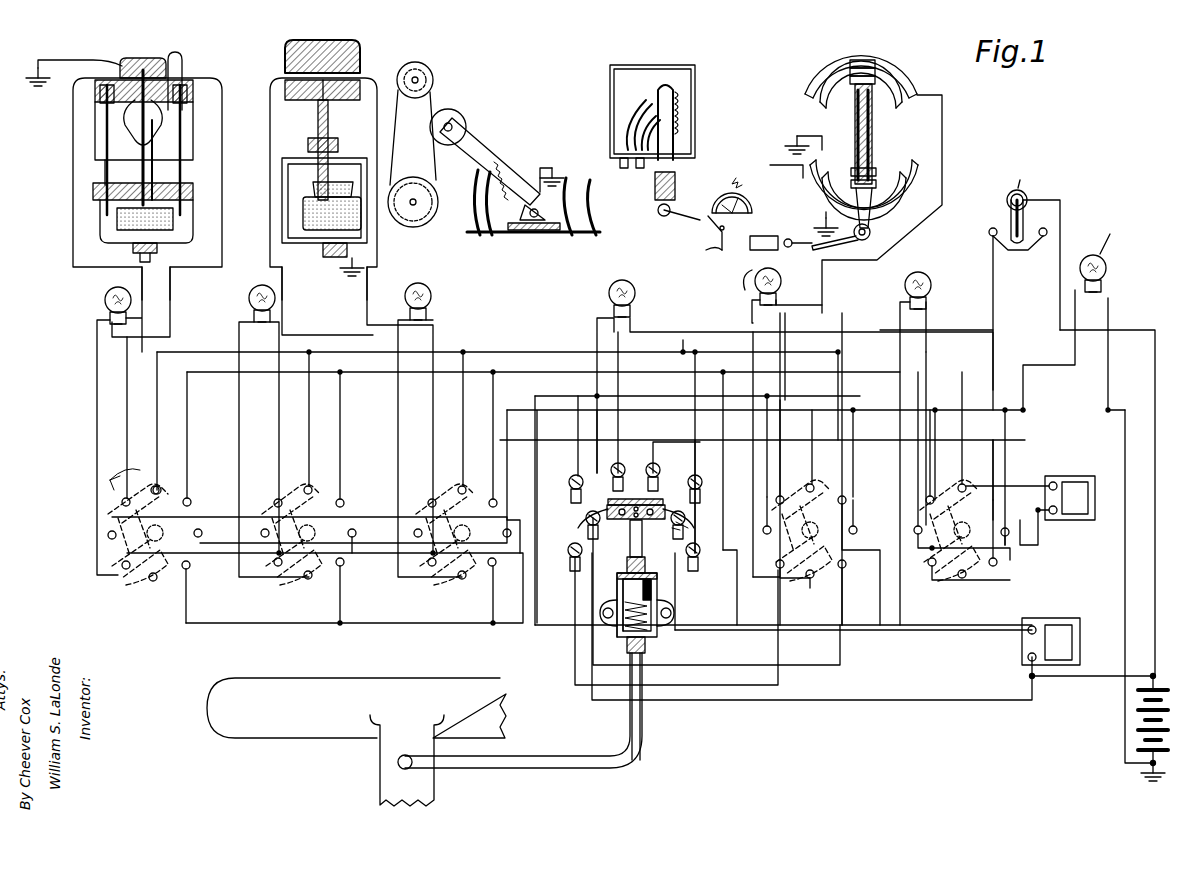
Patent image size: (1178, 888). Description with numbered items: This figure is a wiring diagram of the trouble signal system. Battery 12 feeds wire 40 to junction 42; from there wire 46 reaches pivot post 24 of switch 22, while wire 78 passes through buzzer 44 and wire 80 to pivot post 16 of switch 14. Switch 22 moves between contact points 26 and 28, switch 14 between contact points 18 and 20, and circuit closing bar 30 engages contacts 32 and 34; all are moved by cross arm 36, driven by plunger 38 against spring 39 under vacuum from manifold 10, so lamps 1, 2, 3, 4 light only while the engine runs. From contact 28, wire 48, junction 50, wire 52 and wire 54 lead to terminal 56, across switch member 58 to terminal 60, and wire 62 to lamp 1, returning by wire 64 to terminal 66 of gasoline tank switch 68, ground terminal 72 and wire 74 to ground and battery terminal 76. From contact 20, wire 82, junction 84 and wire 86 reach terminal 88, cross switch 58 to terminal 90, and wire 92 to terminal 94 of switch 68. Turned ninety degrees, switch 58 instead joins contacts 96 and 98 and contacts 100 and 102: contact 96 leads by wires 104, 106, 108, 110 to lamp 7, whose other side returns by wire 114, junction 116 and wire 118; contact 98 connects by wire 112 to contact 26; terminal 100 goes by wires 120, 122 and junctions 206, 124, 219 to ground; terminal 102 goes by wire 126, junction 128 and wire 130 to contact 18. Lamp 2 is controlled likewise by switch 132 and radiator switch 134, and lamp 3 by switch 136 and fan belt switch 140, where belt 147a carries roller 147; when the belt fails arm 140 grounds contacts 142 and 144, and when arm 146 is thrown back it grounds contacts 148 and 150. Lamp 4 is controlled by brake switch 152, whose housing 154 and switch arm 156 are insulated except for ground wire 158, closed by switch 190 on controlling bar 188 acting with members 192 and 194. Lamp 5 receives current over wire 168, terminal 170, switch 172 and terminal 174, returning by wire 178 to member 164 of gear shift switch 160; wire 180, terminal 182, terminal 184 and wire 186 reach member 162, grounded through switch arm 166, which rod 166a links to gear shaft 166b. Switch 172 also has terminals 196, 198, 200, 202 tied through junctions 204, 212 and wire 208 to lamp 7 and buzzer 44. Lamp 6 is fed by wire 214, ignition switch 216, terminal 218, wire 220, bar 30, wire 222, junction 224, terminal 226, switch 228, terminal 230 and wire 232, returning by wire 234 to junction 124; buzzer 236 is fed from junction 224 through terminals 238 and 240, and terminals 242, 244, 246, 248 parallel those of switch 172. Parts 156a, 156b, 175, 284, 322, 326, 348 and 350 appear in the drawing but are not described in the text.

The lamp 1 is at (109, 305).
The lamp 2 is at (253, 303).
The lamp 3 is at (408, 301).
The lamp 4 is at (612, 298).
The lamp 5 is at (759, 284).
The lamp 6 is at (924, 288).
The switch off signal lamp 7 is at (1119, 250).
The manifold 10 is at (420, 692).
The battery 12 is at (1138, 720).
The switch 14 is at (690, 520).
The pivot post 16 is at (672, 526).
The contact point 18 is at (692, 540).
The contact point 20 is at (690, 486).
The switch 22 is at (580, 530).
The pivot post 24 is at (604, 530).
The contact point 26 is at (576, 558).
The contact point 28 is at (568, 490).
The circuit closing bar 30 is at (612, 496).
The contact 32 is at (612, 470).
The contact 34 is at (658, 480).
The cross arm 36 is at (620, 518).
The plunger 38 is at (657, 592).
The spring 39 is at (656, 632).
The wire 40 is at (1088, 678).
The junction 42 is at (1032, 680).
The buzzer 44 is at (1080, 642).
The wire 46 is at (882, 698).
The wire 48 is at (572, 424).
The junction 50 is at (572, 394).
The wire 52 is at (530, 404).
The wire 54 is at (392, 623).
The switch terminal 56 is at (190, 568).
The switch member 58 is at (180, 517).
The switch terminal 60 is at (153, 582).
The wire 62 is at (97, 398).
The wire 64 is at (73, 172).
The terminal 66 is at (125, 78).
The switch 68 is at (158, 72).
The ground terminal 72 is at (143, 72).
The wire 74 is at (40, 58).
The terminal 76 is at (1159, 769).
The wire 78 is at (1028, 668).
The wire 80 is at (918, 630).
The wire 82 is at (695, 430).
The junction 84 is at (692, 354).
The wire 86 is at (538, 352).
The switch terminal 88 is at (170, 486).
The terminal 90 is at (112, 505).
The wire 92 is at (222, 176).
The terminal 94 is at (175, 78).
The contact 96 is at (126, 570).
The contact 98 is at (112, 540).
The contact 100 is at (212, 533).
The contact 102 is at (190, 502).
The wire 104 is at (372, 556).
The wire 106 is at (710, 684).
The wire 108 is at (866, 548).
The wire 110 is at (1040, 366).
The wire 112 is at (362, 512).
The wire 114 is at (1110, 376).
The junction 116 is at (1106, 408).
The wire 118 is at (1125, 588).
The wire 120 is at (352, 536).
The wire 122 is at (632, 410).
The junction 124 is at (936, 408).
The wire 126 is at (212, 374).
The junction 128 is at (731, 451).
The wire 130 is at (723, 448).
The switch 132 is at (322, 484).
The switch 134 is at (340, 74).
The switch 136 is at (454, 596).
The switch arm 140 is at (510, 170).
The contact 142 is at (432, 200).
The contact 144 is at (486, 224).
The arm 146 is at (470, 145).
The roller 147 is at (442, 112).
The fan belt 147a is at (427, 76).
The contact 148 is at (566, 176).
The contact 150 is at (592, 186).
The switch 152 is at (678, 84).
The switch housing 154 is at (690, 108).
The switch arm 156 is at (672, 186).
The spring 156a is at (708, 245).
The lever 156b is at (726, 228).
The ground wire 158 is at (742, 172).
The switch 160 is at (870, 62).
The switch member 162 is at (820, 82).
The switch member 164 is at (818, 106).
The switch arm 166 is at (870, 230).
The rod 166a is at (800, 238).
The gear shaft 166b is at (748, 280).
The wire 168 is at (750, 664).
The terminal 170 is at (848, 566).
The switch 172 is at (802, 530).
The terminal 174 is at (806, 582).
The conductor 175 is at (752, 566).
The wire 178 is at (826, 262).
The wire 180 is at (803, 469).
The terminal 182 is at (812, 484).
The terminal 184 is at (782, 494).
The wire 186 is at (802, 286).
The controlling bar 188 is at (872, 122).
The switch 190 is at (848, 200).
The ground circuit switch member 192 is at (834, 152).
The ground circuit switch member 194 is at (810, 180).
The terminal 196 is at (764, 532).
The terminal 198 is at (778, 562).
The terminal 200 is at (846, 498).
The terminal 202 is at (856, 528).
The junction 204 is at (766, 396).
The junction 206 is at (858, 410).
The wire 208 is at (680, 394).
The junction 212 is at (840, 356).
The wire 214 is at (1150, 546).
The ignition switch 216 is at (1030, 198).
The terminal 218 is at (989, 234).
The junction 219 is at (1009, 464).
The wire 220 is at (852, 334).
The wire 222 is at (672, 444).
The junction 224 is at (1038, 520).
The terminal 226 is at (992, 566).
The switch 228 is at (950, 530).
The terminal 230 is at (962, 580).
The wire 232 is at (920, 574).
The wire 234 is at (938, 312).
The buzzer 236 is at (1064, 476).
The terminal 238 is at (964, 482).
The terminal 240 is at (936, 480).
The terminal 242 is at (962, 466).
The terminal 244 is at (932, 568).
The terminal 246 is at (992, 531).
The terminal 248 is at (1008, 545).
The diaphragm chamber 284 is at (162, 225).
The diaphragm chamber 322 is at (327, 222).
The rod 326 is at (328, 125).
The contact 348 is at (632, 98).
The contact 350 is at (640, 116).